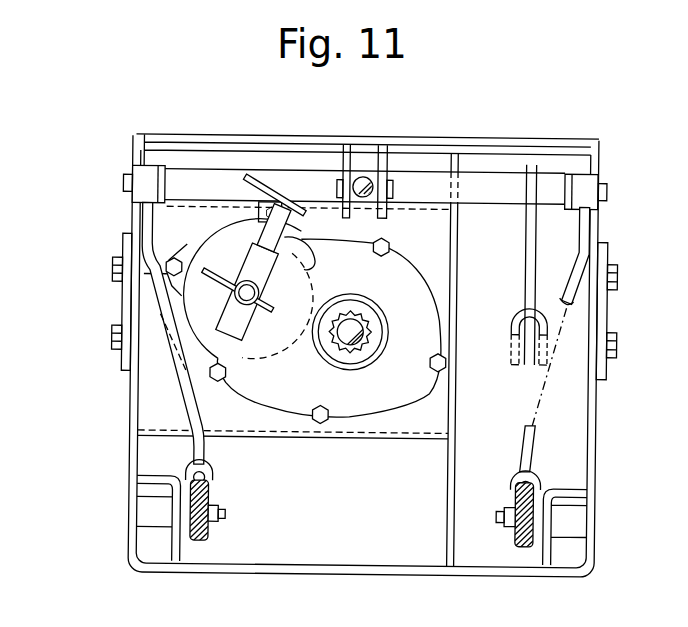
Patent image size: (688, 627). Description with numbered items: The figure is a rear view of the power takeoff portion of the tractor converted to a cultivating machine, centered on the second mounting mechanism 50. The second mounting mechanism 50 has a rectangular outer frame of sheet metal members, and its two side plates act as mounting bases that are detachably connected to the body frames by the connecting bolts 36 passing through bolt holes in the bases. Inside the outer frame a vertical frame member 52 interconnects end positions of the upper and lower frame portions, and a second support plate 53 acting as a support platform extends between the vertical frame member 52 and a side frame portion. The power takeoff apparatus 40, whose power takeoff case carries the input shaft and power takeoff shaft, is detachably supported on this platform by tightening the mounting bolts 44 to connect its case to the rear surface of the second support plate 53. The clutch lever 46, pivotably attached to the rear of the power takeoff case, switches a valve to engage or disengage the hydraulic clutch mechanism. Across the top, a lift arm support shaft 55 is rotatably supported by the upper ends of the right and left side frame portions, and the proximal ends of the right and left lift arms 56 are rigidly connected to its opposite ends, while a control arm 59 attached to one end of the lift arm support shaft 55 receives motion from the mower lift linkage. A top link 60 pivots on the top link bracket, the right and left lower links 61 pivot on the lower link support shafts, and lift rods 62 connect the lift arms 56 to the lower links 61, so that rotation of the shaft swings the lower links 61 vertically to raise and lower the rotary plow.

The connecting bolt 36 is at (113, 333).
The power takeoff apparatus 40 is at (284, 436).
The mounting bolt 44 is at (388, 245).
The clutch lever 46 is at (283, 188).
The second mounting mechanism 50 is at (104, 221).
The vertical frame member 52 is at (448, 522).
The second support plate 53 is at (391, 425).
The lift arm support shaft 55 is at (222, 176).
The lift arm 56 is at (150, 165).
The control arm 59 is at (525, 260).
The top link 60 is at (366, 180).
The lower link 61 is at (205, 548).
The lift rod 62 is at (190, 393).